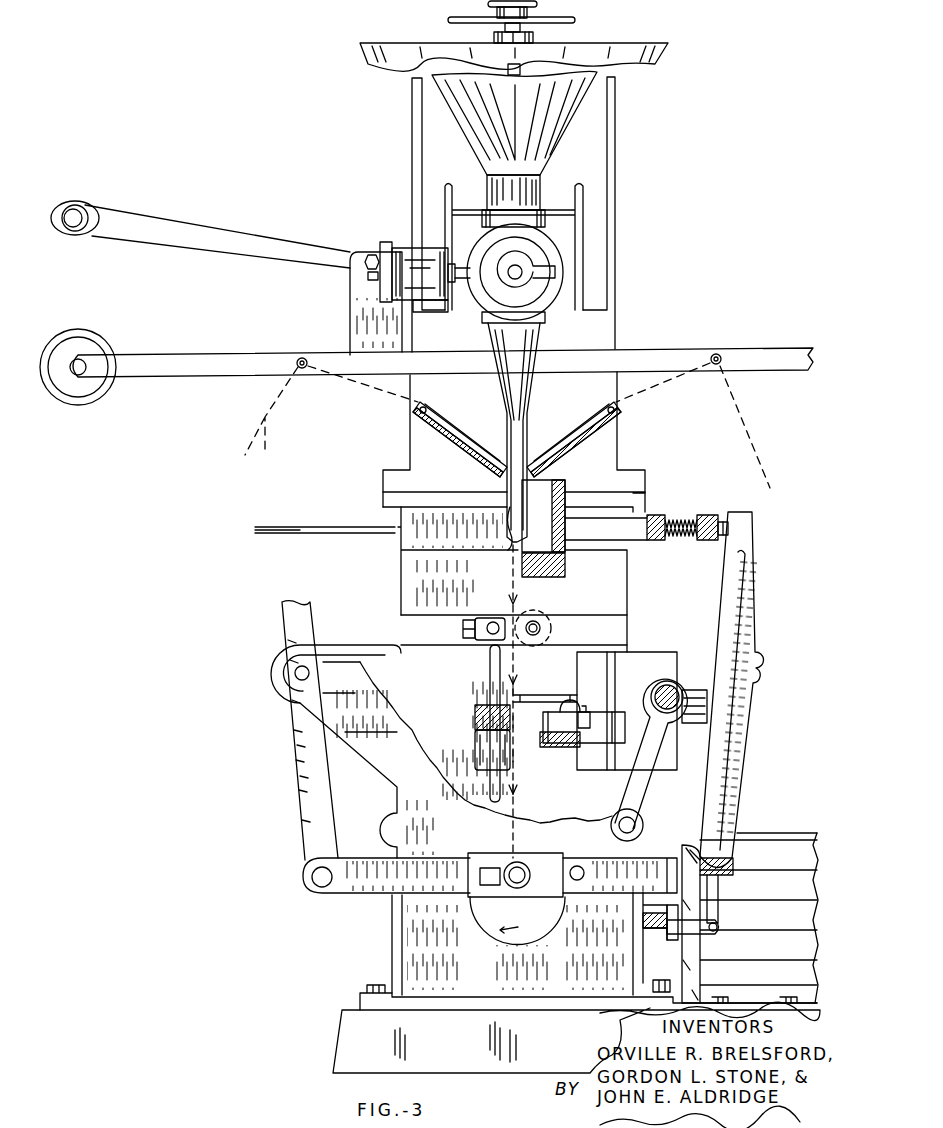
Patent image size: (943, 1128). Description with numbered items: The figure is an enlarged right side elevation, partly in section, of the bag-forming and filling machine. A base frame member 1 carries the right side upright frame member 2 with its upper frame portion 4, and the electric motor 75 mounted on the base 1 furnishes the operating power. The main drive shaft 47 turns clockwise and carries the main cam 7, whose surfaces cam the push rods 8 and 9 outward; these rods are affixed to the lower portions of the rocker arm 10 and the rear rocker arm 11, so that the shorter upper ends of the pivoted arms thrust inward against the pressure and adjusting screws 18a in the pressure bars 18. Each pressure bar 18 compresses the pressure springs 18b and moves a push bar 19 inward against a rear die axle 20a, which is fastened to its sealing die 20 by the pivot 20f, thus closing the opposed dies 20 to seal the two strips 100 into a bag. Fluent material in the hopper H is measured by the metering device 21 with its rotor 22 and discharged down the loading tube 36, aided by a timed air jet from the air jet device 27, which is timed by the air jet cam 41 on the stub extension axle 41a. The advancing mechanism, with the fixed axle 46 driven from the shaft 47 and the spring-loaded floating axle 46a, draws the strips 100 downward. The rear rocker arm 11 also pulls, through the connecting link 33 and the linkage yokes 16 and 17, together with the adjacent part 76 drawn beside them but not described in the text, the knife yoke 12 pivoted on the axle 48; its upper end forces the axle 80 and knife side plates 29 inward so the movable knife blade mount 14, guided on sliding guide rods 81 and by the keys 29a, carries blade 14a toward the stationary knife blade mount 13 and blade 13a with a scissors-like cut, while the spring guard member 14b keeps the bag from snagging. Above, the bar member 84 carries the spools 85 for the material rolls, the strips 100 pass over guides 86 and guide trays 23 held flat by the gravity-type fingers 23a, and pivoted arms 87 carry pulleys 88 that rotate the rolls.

The base frame member 1 is at (352, 1033).
The right side upright frame member 2 is at (400, 798).
The upper frame portion 4 is at (418, 446).
The main cam 7 is at (517, 940).
The push rod 8 is at (370, 897).
The push rod 9 is at (616, 888).
The rocker arm 10 is at (295, 752).
The rear rocker arm 11 is at (730, 772).
The knife yoke 12 is at (648, 790).
The stationary knife blade mount 13 is at (475, 717).
The knife blade 13a is at (478, 745).
The movable knife blade mount 14 is at (568, 748).
The knife blade 14a is at (537, 745).
The spring guard member 14b is at (563, 712).
The linkage yoke 16 is at (645, 922).
The linkage yoke 17 is at (690, 936).
The pressure bar 18 is at (707, 515).
The pressure and adjusting screw 18a is at (730, 515).
The pressure spring 18b is at (683, 517).
The push bar 19 is at (657, 515).
The sealing die 20 is at (600, 480).
The rear die axle 20a is at (625, 518).
The pivot 20f is at (628, 540).
The metering device 21 is at (563, 262).
The rotor 22 is at (492, 298).
The guide tray 23 is at (465, 440).
The gravity-type finger 23a is at (470, 432).
The air jet device 27 is at (404, 232).
The knife side plate 29 is at (648, 655).
The key 29a is at (618, 700).
The connecting link 33 is at (720, 892).
The loading tube 36 is at (505, 380).
The air jet cam 41 is at (560, 290).
The stub extension axle 41a is at (515, 265).
The axle 46 is at (536, 622).
The floating axle 46a is at (493, 622).
The main drive shaft 47 is at (505, 882).
The axle 48 is at (645, 823).
The electric motor 75 is at (760, 835).
The nut 76 is at (665, 940).
The axle 80 is at (676, 684).
The sliding guide rod 81 is at (532, 712).
The bar member 84 is at (214, 358).
The spool 85 is at (108, 345).
The guide 86 is at (305, 370).
The arm 87 is at (240, 232).
The pulley 88 is at (85, 200).
The strip of sealable material 100 is at (648, 416).
The hopper H is at (553, 131).